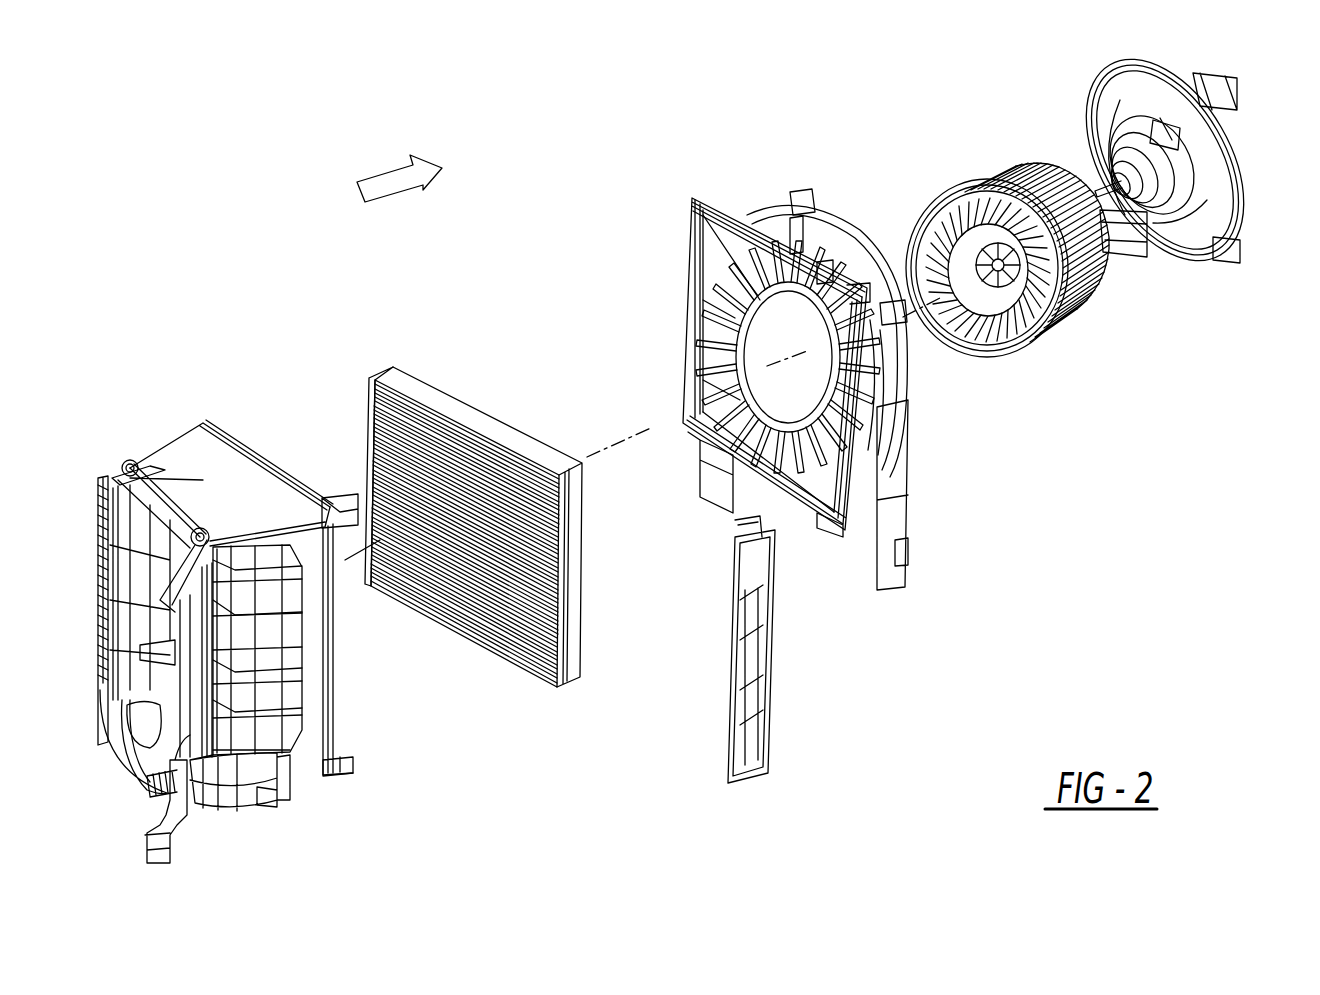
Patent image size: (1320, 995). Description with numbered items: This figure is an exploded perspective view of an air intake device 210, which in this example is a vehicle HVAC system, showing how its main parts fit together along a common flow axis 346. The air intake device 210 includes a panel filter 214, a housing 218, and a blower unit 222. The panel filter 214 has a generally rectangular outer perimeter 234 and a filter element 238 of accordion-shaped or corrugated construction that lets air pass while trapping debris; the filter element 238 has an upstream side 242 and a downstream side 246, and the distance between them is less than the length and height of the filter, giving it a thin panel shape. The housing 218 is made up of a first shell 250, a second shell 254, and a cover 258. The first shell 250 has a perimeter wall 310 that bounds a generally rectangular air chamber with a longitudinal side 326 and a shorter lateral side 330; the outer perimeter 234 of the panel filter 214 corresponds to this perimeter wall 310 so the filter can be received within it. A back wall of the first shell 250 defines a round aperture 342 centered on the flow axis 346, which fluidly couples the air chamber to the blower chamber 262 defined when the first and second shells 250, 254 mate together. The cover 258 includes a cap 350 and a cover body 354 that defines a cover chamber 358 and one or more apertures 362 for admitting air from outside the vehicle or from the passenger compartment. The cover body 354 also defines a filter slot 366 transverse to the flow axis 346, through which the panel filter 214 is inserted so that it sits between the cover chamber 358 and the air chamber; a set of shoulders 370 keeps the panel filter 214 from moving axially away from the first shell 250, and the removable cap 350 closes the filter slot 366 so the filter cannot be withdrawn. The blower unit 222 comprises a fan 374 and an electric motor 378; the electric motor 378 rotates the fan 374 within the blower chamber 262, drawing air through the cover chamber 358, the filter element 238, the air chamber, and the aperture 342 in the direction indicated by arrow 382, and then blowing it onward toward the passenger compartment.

The air intake device 210 is at (812, 430).
The panel filter 214 is at (496, 524).
The housing 218 is at (809, 307).
The blower unit 222 is at (1091, 220).
The outer perimeter 234 is at (370, 428).
The filter element 238 is at (500, 630).
The upstream side 242 is at (552, 573).
The downstream side 246 is at (582, 548).
The first shell 250 is at (898, 507).
The second shell 254 is at (1165, 188).
The cover 258 is at (254, 596).
The blower chamber 262 is at (890, 377).
The perimeter wall 310 is at (713, 258).
The longitudinal side 326 is at (690, 312).
The lateral side 330 is at (735, 220).
The aperture 342 is at (735, 352).
The flow axis 346 is at (345, 560).
The cap 350 is at (768, 610).
The cover body 354 is at (208, 470).
The cover chamber 358 is at (268, 727).
The apertures 362 is at (150, 625).
The filter slot 366 is at (335, 503).
The shoulders 370 is at (320, 663).
The fan 374 is at (1057, 317).
The electric motor 378 is at (1163, 182).
The arrow 382 is at (385, 167).